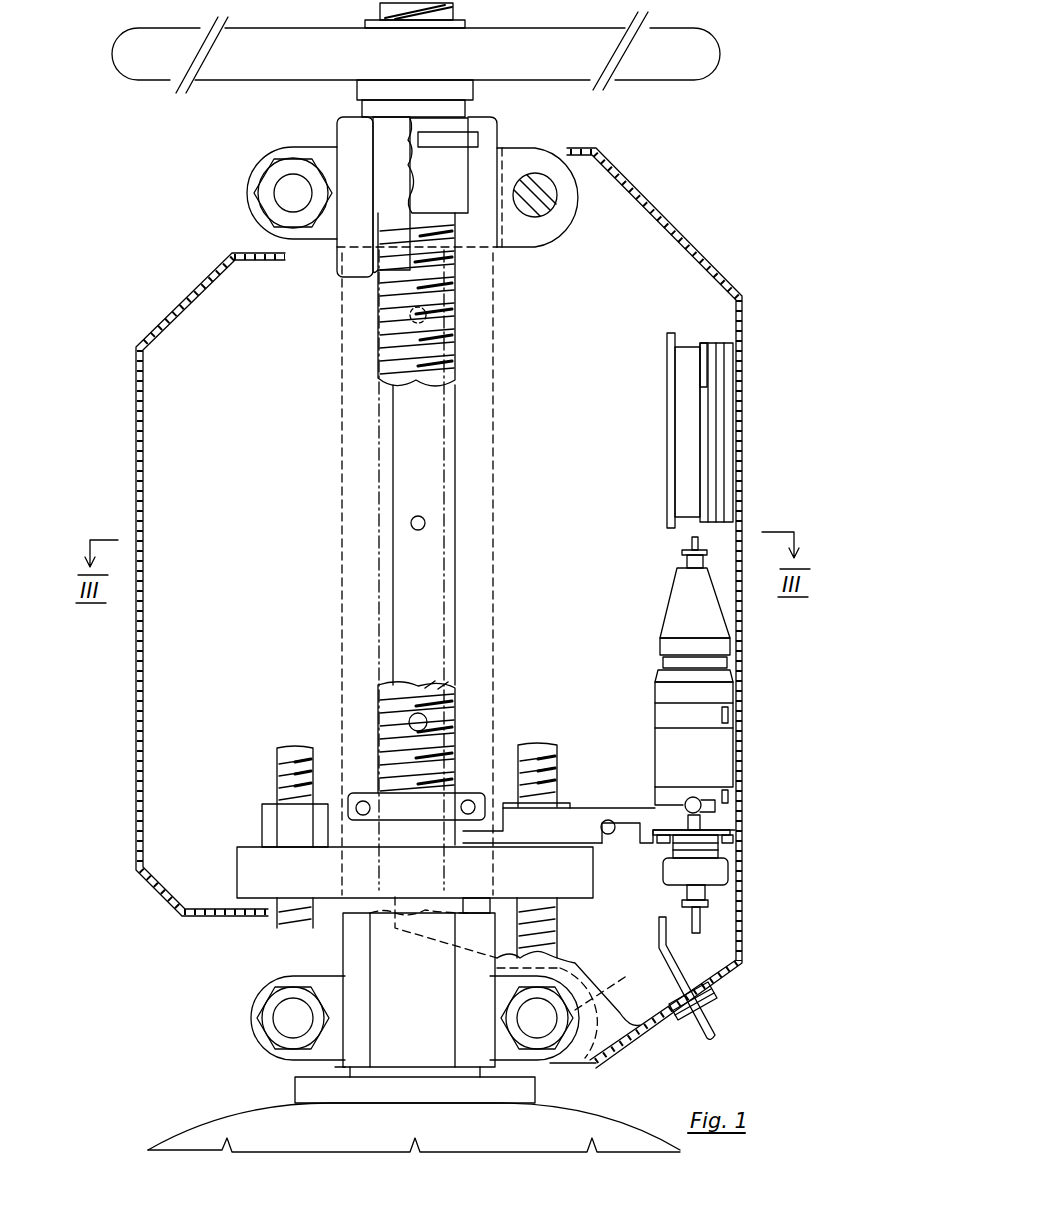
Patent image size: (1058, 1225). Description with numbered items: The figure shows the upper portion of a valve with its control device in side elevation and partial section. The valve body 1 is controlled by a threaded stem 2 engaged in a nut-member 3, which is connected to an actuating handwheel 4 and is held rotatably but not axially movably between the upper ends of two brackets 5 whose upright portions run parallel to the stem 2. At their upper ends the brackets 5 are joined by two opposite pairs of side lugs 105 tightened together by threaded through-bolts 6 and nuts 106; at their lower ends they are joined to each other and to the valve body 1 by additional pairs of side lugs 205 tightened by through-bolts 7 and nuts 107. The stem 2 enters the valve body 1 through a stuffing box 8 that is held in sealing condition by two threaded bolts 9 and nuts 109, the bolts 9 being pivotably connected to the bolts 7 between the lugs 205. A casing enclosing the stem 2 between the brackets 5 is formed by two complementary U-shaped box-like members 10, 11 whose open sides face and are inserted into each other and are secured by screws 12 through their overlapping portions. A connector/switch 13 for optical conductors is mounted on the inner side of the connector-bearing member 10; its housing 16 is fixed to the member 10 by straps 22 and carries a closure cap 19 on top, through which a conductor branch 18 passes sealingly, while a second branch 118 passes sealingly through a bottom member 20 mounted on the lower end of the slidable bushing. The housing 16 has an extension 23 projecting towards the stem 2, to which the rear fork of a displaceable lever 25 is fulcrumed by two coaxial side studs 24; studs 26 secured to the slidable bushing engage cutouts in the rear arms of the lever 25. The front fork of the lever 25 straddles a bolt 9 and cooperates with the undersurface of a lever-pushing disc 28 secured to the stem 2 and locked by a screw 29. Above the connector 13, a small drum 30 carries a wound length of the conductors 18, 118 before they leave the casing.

The valve body 1 is at (168, 1138).
The threaded stem 2 is at (455, 348).
The nut-member 3 is at (465, 178).
The actuating handwheel 4 is at (696, 38).
The brackets 5 is at (493, 463).
The threaded through-bolts 6 is at (285, 192).
The threaded through-bolts 7 is at (282, 1022).
The stuffing box 8 is at (250, 858).
The threaded bolts 9 is at (278, 750).
The connector-bearing box-like member 10 is at (722, 278).
The box-like member 11 is at (137, 412).
The screws 12 is at (428, 318).
The connector/switch 13 is at (657, 592).
The housing 16 is at (722, 752).
The conductor branch 18 is at (690, 542).
The closure cap 19 is at (676, 617).
The bottom member 20 is at (720, 872).
The straps 22 is at (712, 715).
The extension 23 is at (645, 845).
The side studs 24 is at (608, 818).
The displaceable lever 25 is at (540, 828).
The side studs 26 is at (705, 806).
The lever-pushing disc 28 is at (385, 800).
The screw 29 is at (475, 798).
The small drum 30 is at (690, 372).
The side lugs 105 is at (283, 150).
The nuts 106 is at (296, 225).
The nuts 107 is at (272, 985).
The nuts 109 is at (262, 808).
The conductor branch 118 is at (700, 920).
The side lugs 205 is at (270, 1060).